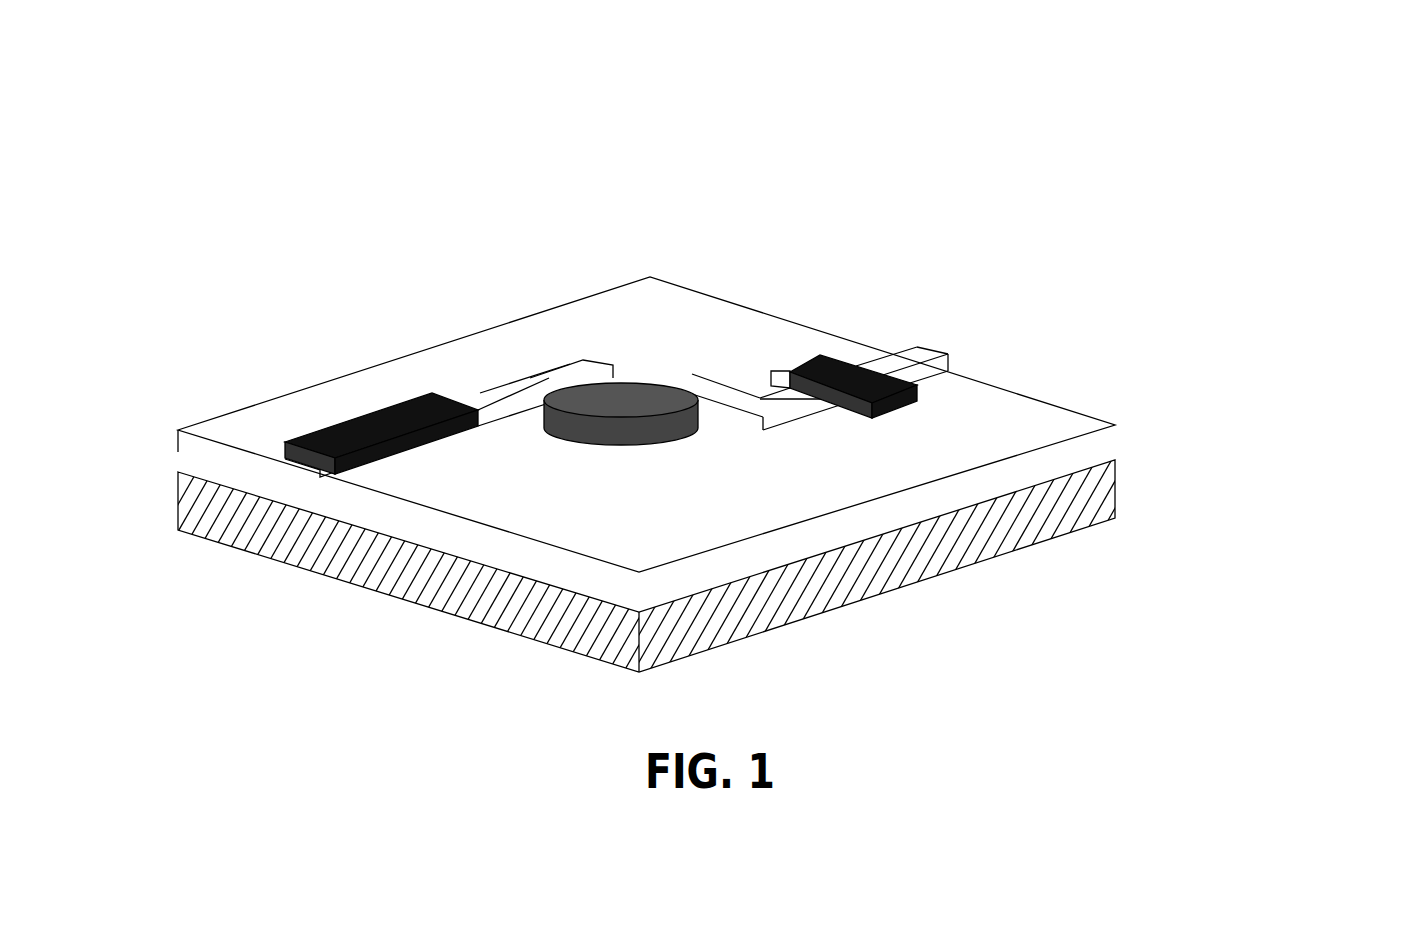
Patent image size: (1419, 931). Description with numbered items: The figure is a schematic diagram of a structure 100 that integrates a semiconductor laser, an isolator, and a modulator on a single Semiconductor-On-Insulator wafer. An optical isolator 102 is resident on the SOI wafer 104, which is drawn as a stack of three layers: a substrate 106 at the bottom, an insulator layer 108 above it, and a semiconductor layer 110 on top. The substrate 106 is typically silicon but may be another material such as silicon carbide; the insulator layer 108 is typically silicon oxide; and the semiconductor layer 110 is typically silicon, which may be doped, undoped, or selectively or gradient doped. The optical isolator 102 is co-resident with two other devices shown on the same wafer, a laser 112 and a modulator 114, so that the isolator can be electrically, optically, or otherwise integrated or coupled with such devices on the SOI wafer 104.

The structure 100 is at (702, 133).
The optical isolator 102 is at (622, 413).
The SOI wafer 104 is at (175, 547).
The substrate 106 is at (1115, 503).
The insulator layer 108 is at (1098, 452).
The semiconductor layer 110 is at (1105, 430).
The laser 112 is at (422, 412).
The modulator 114 is at (861, 370).